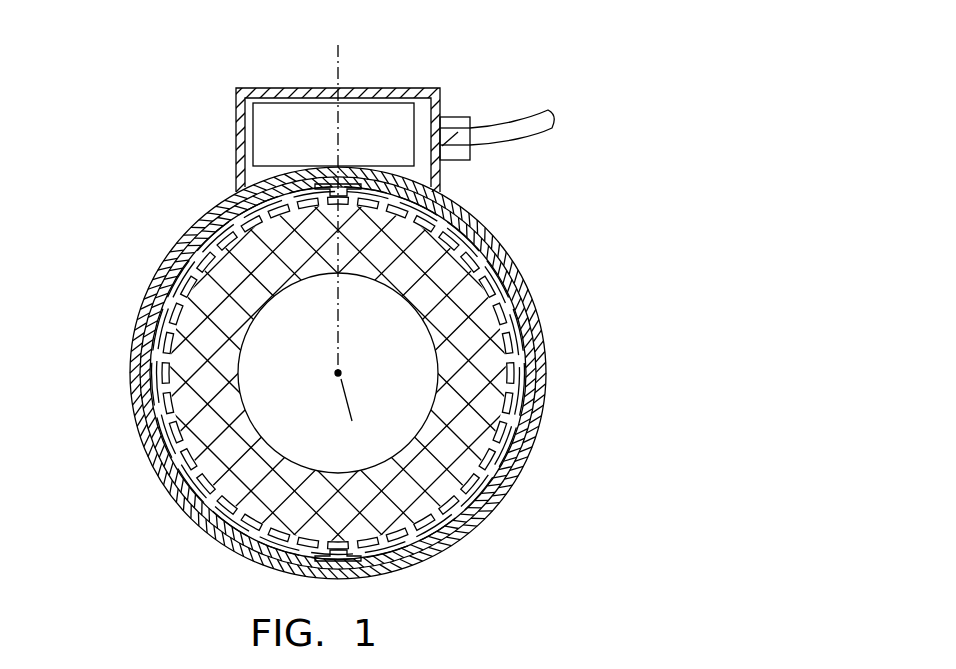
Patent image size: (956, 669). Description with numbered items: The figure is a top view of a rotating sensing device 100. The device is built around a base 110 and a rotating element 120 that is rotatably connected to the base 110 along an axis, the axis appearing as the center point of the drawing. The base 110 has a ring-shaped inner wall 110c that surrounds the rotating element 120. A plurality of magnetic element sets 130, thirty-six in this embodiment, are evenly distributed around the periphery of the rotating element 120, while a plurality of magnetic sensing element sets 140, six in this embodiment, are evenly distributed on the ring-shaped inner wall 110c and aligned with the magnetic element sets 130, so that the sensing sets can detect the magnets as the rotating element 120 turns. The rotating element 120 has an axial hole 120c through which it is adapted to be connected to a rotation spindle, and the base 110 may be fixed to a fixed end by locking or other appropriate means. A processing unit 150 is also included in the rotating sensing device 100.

The rotating sensing device 100 is at (646, 110).
The base 110 is at (506, 236).
The ring-shaped inner wall 110c is at (240, 528).
The rotating element 120 is at (493, 355).
The axial hole 120c is at (271, 444).
The magnetic element sets 130 is at (220, 232).
The magnetic sensing element sets 140 is at (173, 263).
The processing unit 150 is at (281, 107).